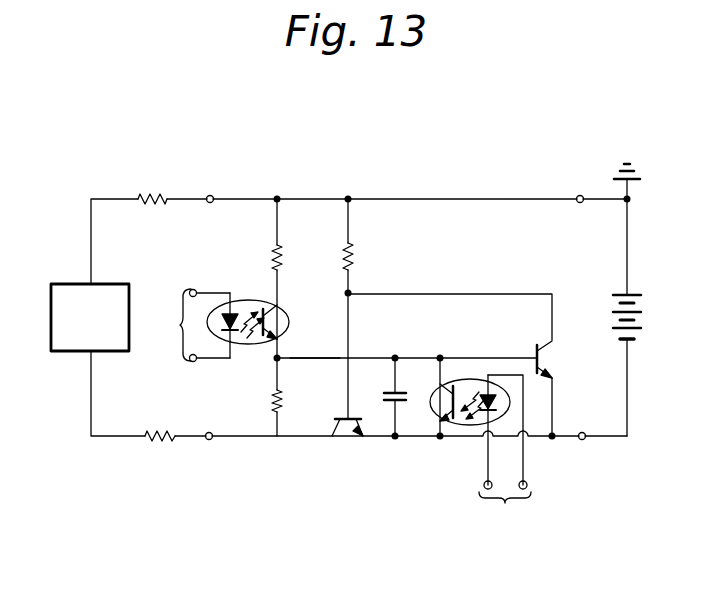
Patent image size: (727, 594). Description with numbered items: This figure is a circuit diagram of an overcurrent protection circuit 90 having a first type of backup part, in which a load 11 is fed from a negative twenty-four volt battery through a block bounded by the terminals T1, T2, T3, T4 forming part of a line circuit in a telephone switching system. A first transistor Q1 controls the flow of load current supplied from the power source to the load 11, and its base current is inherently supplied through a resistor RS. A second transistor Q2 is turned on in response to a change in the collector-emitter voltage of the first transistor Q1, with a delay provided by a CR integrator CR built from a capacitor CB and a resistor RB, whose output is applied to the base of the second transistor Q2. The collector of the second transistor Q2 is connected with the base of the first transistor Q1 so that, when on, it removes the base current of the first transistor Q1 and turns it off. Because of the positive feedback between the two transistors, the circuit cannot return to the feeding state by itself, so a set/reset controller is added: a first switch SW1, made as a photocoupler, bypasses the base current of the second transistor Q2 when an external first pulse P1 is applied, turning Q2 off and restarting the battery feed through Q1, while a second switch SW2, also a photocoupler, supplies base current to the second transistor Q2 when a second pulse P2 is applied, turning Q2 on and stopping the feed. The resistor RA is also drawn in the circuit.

The overcurrent protection circuit 90 is at (391, 294).
The load 11 is at (74, 284).
The terminal T1 is at (211, 196).
The terminal T2 is at (211, 433).
The terminal T3 is at (578, 198).
The terminal T4 is at (582, 433).
The resistor RA is at (283, 252).
The resistor RS is at (354, 252).
The resistor RB is at (283, 405).
The integrator CR is at (315, 370).
The capacitor CB is at (406, 398).
The first transistor Q1 is at (349, 443).
The second transistor Q2 is at (556, 362).
The first switch SW1 is at (463, 378).
The second switch SW2 is at (249, 301).
The first pulse P1 is at (506, 514).
The second pulse P2 is at (176, 325).